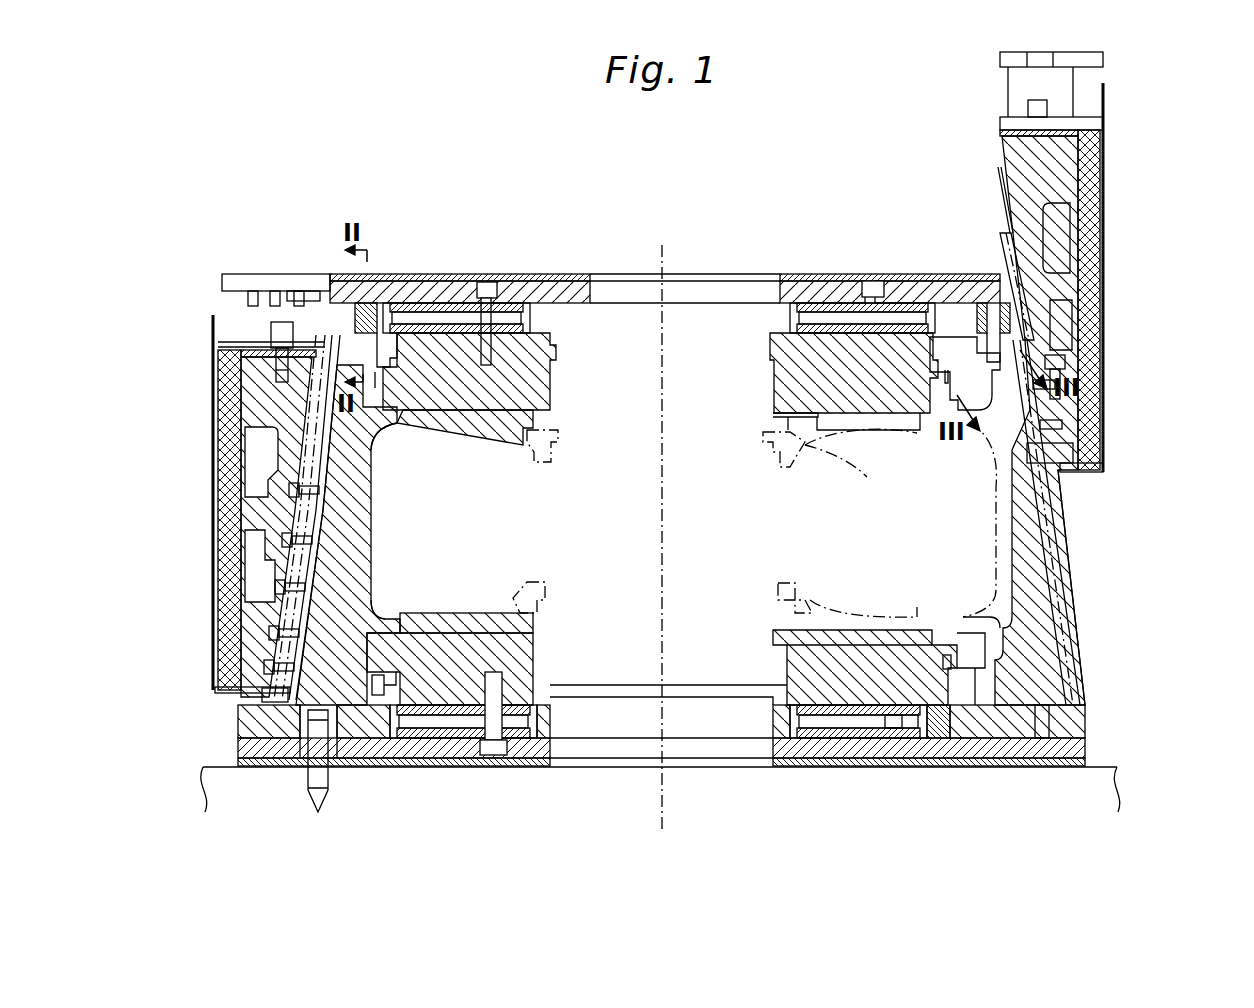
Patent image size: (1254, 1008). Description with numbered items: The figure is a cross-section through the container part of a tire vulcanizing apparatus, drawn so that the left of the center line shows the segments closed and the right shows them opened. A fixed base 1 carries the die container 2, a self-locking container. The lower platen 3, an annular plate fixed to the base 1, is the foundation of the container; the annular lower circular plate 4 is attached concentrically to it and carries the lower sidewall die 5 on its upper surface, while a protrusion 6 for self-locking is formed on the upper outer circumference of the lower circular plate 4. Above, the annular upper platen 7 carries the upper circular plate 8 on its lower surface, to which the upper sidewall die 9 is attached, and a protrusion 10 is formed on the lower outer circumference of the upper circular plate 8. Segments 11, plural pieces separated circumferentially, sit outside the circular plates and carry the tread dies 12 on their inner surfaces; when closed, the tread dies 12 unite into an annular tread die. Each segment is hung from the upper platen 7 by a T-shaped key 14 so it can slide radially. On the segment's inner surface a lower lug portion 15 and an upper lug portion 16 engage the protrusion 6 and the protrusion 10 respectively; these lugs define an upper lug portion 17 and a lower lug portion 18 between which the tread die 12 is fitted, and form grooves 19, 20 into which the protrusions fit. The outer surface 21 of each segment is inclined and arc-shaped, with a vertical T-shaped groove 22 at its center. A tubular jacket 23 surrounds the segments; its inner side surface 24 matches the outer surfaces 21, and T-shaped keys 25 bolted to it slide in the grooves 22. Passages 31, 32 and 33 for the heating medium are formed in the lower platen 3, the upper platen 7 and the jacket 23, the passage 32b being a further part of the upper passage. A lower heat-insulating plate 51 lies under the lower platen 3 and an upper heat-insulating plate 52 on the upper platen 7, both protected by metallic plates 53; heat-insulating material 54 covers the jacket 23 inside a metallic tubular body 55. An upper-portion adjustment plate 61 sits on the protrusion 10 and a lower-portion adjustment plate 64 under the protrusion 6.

The fixed base 1 is at (1112, 800).
The die container 2 is at (193, 237).
The lower platen 3 is at (935, 758).
The lower circular plate 4 is at (790, 660).
The lower sidewall die 5 is at (477, 613).
The protrusion 6 is at (350, 683).
The upper platen 7 is at (865, 274).
The upper circular plate 8 is at (558, 303).
The upper sidewall die 9 is at (473, 443).
The protrusion 10 is at (412, 303).
The segments 11 is at (345, 773).
The tread dies 12 is at (370, 527).
The T-shaped keys 14 is at (322, 274).
The lug portion 15 is at (397, 677).
The lug portion 16 is at (395, 303).
The upper lug portion 17 is at (380, 420).
The lower lug portion 18 is at (382, 627).
The concaved groove 19 is at (403, 425).
The concaved groove 20 is at (377, 647).
The outer surface 21 is at (1083, 660).
The T-shaped groove 22 is at (1077, 633).
The jacket 23 is at (992, 138).
The inner side surface 24 is at (1000, 190).
The T-shaped keys 25 is at (1000, 240).
The passage 31 is at (477, 723).
The passage 32 is at (440, 281).
The heating plate portion 32b is at (920, 274).
The passage 33 is at (260, 467).
The lower heat-insulating plate 51 is at (850, 767).
The upper heat-insulating plate 52 is at (458, 303).
The metallic plates 53 is at (498, 274).
The heat-insulating material 54 is at (223, 410).
The metallic tubular body 55 is at (1103, 97).
The upper-portion adjustment plate 61 is at (340, 350).
The lower-portion adjustment plate 64 is at (450, 710).